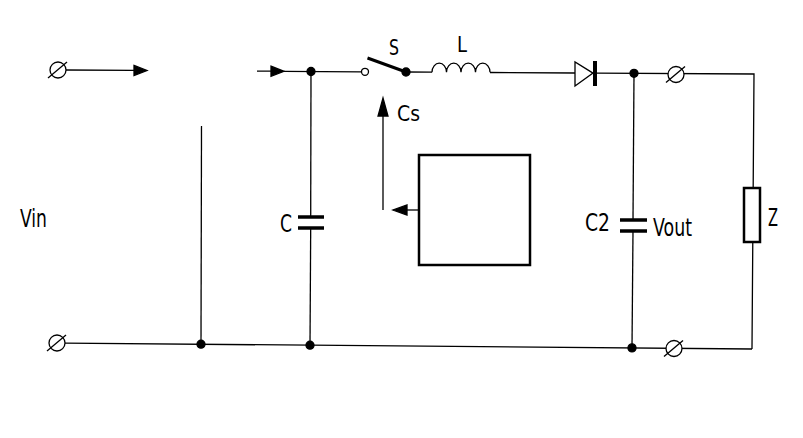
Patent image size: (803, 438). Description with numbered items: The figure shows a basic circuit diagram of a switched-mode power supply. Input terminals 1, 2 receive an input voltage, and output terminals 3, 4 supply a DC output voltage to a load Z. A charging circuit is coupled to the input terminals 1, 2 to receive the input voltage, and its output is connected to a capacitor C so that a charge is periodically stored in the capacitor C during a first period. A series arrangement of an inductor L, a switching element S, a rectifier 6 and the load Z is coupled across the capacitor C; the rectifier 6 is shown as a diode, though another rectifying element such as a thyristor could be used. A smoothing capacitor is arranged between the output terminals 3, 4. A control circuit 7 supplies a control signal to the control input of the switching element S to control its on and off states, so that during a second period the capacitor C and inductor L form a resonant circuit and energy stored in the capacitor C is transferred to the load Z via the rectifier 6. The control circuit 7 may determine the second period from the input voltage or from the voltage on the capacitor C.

The input terminal 1 is at (50, 66).
The input terminal 2 is at (49, 340).
The output terminal 3 is at (678, 66).
The output terminal 4 is at (508, 225).
The rectifier 6 is at (586, 58).
The control circuit 7 is at (477, 167).